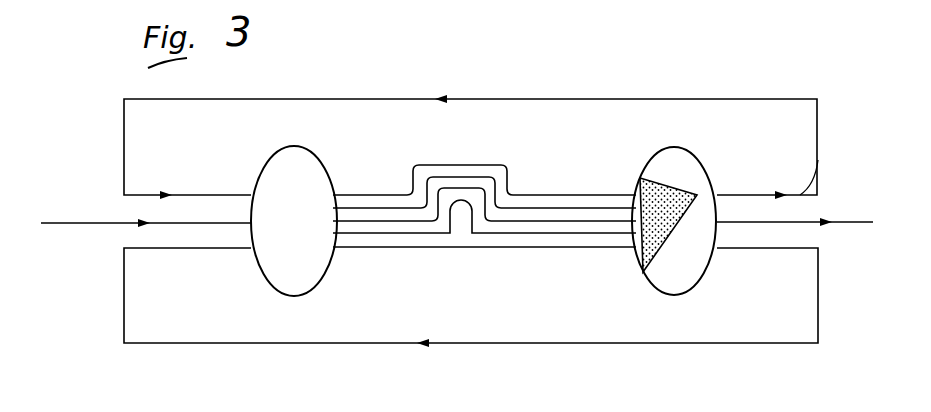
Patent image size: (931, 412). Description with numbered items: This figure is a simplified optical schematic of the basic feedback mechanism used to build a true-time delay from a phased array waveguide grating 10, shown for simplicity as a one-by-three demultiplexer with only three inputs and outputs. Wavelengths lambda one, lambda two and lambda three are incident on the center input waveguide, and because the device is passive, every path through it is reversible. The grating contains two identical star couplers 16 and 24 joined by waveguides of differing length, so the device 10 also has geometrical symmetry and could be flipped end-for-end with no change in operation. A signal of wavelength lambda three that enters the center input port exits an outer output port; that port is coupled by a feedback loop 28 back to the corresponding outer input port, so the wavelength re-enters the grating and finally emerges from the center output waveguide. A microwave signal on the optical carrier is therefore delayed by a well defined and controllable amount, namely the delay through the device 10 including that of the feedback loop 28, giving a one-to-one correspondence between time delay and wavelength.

The phased array waveguide grating 10 is at (829, 90).
The feedback loop 28 is at (818, 136).
The star coupler 16 is at (267, 284).
The star coupler 24 is at (658, 291).